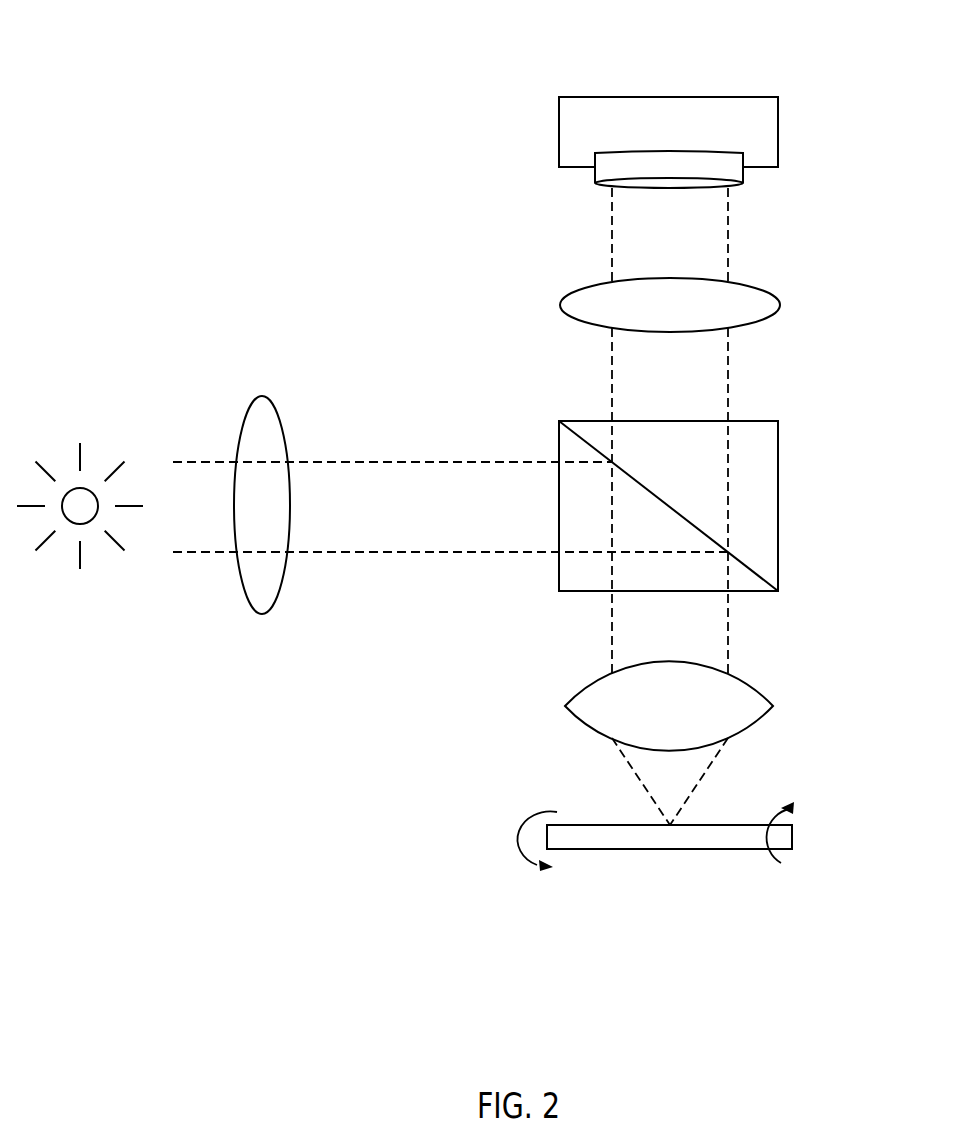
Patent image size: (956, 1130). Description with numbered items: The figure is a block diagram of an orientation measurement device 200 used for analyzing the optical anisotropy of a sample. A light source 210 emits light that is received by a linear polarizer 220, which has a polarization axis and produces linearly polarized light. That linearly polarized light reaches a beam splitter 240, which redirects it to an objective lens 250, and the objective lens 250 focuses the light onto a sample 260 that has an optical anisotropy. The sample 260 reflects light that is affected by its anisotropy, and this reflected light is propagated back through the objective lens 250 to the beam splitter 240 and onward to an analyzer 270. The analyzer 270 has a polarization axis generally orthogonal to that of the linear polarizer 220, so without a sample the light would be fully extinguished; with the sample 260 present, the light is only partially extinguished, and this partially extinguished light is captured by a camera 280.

The orientation measurement device 200 is at (236, 77).
The light source 210 is at (108, 577).
The linear polarizer 220 is at (273, 607).
The beam splitter 240 is at (778, 452).
The objective lens 250 is at (768, 690).
The sample 260 is at (748, 849).
The analyzer 270 is at (778, 305).
The camera 280 is at (778, 116).